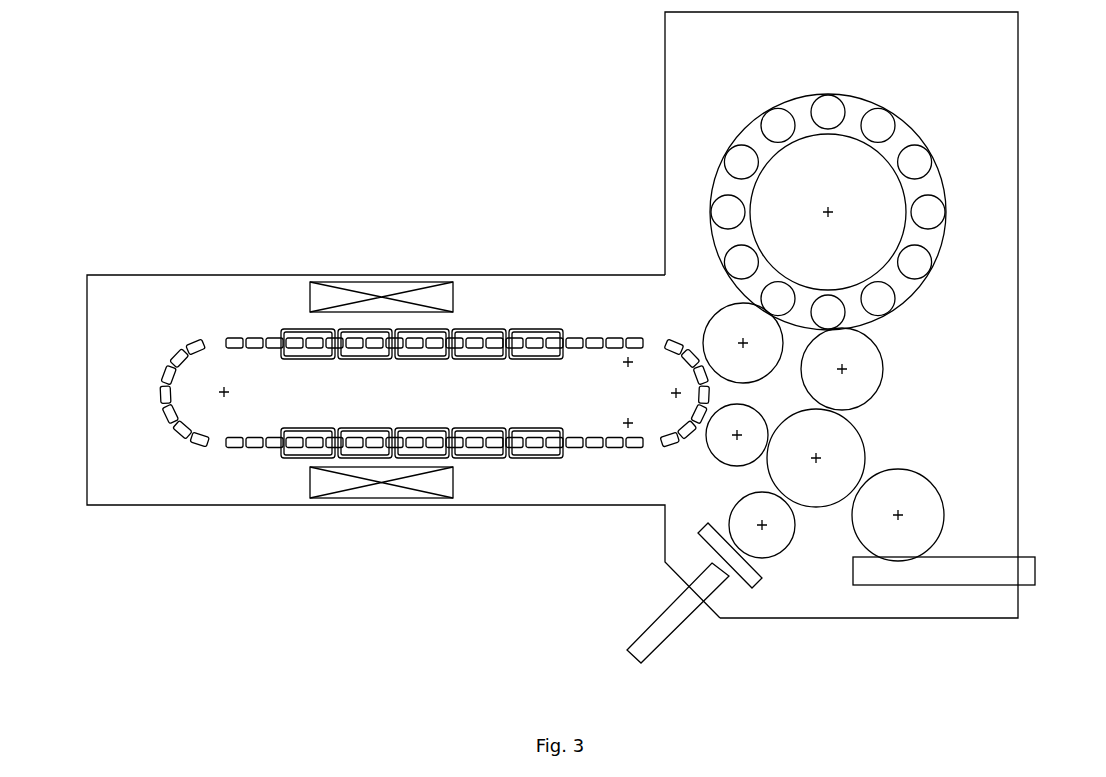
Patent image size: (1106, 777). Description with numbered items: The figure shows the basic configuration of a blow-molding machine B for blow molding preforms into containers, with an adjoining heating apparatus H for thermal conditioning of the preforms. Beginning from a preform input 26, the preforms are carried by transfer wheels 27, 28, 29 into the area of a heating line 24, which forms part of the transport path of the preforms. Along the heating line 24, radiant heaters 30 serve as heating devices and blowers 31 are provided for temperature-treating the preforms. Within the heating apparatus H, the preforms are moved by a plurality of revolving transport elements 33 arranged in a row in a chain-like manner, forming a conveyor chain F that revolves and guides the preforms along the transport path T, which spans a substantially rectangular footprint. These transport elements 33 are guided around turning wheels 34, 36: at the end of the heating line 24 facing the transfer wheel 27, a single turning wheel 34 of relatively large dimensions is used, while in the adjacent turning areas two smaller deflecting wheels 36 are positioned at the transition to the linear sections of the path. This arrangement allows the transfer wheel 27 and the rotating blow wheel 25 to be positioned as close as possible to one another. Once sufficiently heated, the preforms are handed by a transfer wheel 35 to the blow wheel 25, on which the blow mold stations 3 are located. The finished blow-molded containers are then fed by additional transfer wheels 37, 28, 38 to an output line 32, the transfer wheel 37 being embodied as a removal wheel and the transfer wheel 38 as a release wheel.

The blow mold stations 3 is at (890, 122).
The blow wheel 25 is at (940, 185).
The heating line 24 is at (434, 405).
The preform input 26 is at (653, 630).
The transfer wheel 27 is at (773, 558).
The transfer wheel 28 is at (820, 500).
The transfer wheel 29 is at (745, 435).
The radiant heaters 30 is at (478, 328).
The blowers 31 is at (380, 282).
The output line 32 is at (950, 585).
The revolving transport elements 33 is at (256, 448).
The turning wheel 34 is at (224, 397).
The transfer wheel 35 is at (723, 304).
The deflecting wheels 36 is at (627, 358).
The transfer wheel 37 is at (883, 369).
The transfer wheel 38 is at (945, 513).
The blow-molding machine B is at (413, 88).
The heating apparatus H is at (263, 160).
The transport path T is at (212, 302).
The conveyor chain F is at (130, 388).